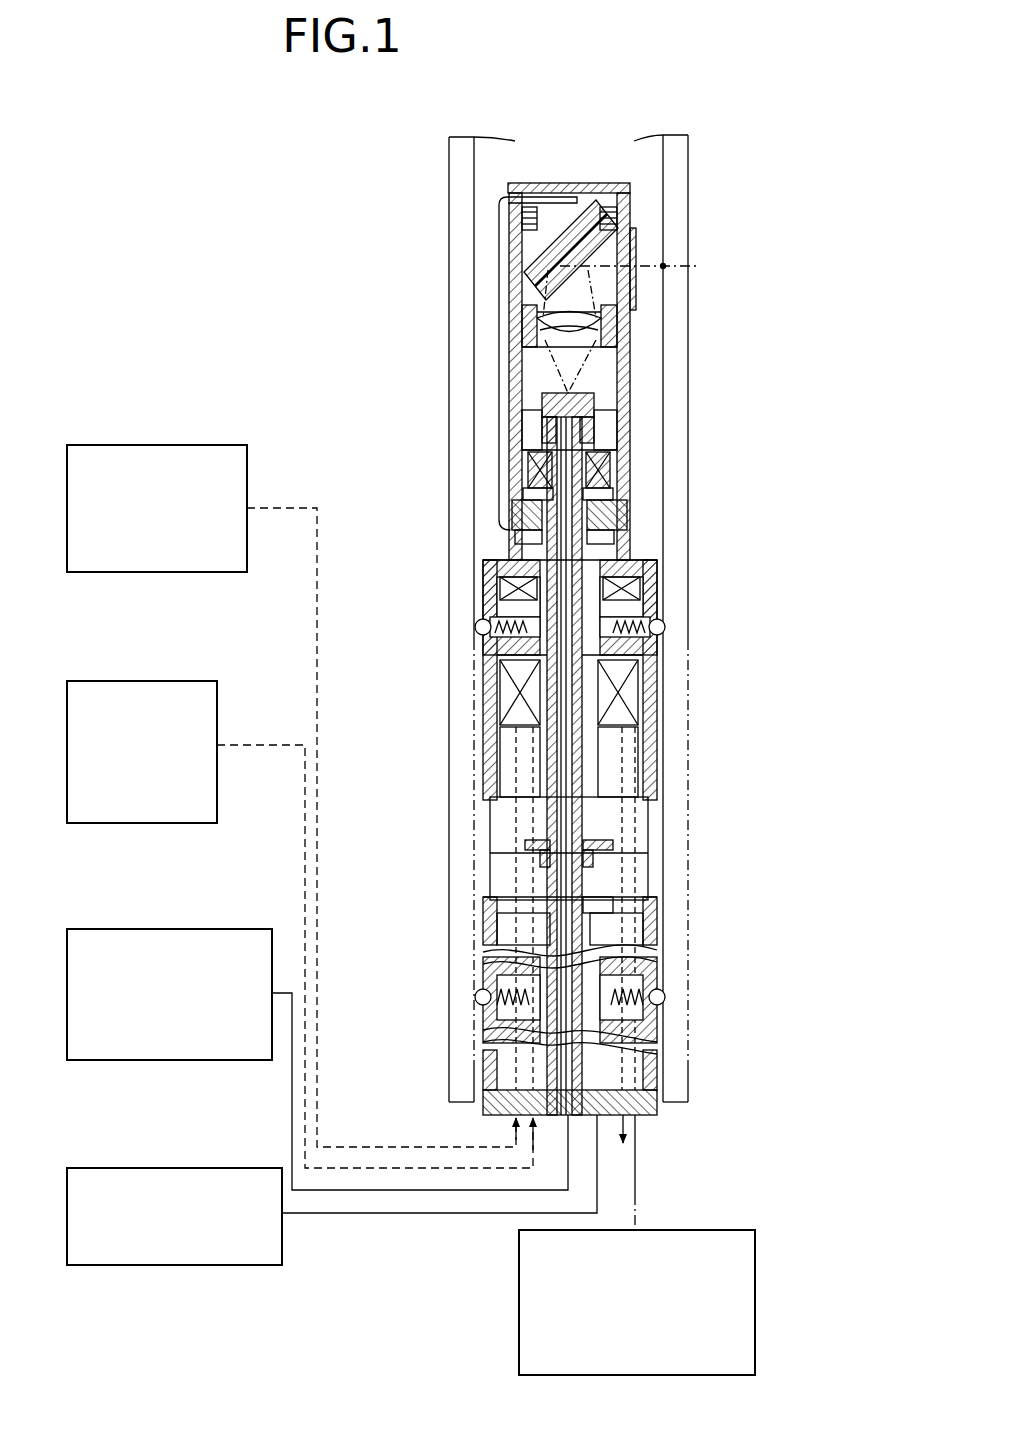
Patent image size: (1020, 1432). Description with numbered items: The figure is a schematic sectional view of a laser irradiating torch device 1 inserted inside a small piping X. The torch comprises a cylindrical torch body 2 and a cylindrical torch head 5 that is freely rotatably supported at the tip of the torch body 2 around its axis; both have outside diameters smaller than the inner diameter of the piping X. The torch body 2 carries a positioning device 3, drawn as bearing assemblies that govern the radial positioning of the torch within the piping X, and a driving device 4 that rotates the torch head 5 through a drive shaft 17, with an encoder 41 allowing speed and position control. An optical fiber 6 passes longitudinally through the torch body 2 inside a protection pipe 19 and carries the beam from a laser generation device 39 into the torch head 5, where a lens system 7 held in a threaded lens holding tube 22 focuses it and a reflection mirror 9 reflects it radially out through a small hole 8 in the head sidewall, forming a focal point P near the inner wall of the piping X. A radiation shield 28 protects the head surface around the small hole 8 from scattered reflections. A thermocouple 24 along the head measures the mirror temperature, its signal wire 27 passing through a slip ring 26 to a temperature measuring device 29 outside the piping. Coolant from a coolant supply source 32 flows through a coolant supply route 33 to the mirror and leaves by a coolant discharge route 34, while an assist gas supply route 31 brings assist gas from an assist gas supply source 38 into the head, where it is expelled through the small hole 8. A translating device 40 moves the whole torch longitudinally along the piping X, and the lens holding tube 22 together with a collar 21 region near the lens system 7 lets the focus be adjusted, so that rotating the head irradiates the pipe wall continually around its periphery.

The laser irradiating torch device 1 is at (366, 197).
The torch body 2 is at (480, 905).
The positioning device 3 is at (466, 616).
The driving device 4 is at (650, 863).
The torch head 5 is at (633, 443).
The optical fiber 6 is at (584, 765).
The lens system 7 is at (512, 366).
The small hole 8 is at (633, 258).
The reflection mirror 9 is at (523, 263).
The drive shaft 17 is at (550, 742).
The protection pipe 19 is at (583, 810).
The collar 21 is at (524, 448).
The lens holding tube 22 is at (633, 363).
The thermocouple 24 is at (510, 303).
The slip ring 26 is at (484, 688).
The signal wire 27 is at (499, 526).
The radiation shield 28 is at (633, 287).
The temperature measuring device 29 is at (755, 1300).
The assist gas supply route 31 is at (480, 930).
The coolant supply source 32 is at (195, 681).
The coolant supply route 33 is at (633, 410).
The coolant discharge route 34 is at (530, 400).
The assist gas supply source 38 is at (200, 445).
The laser generation device 39 is at (195, 929).
The translating device 40 is at (205, 1168).
The encoder 41 is at (618, 898).
The focal point P is at (663, 266).
The small piping X is at (448, 758).